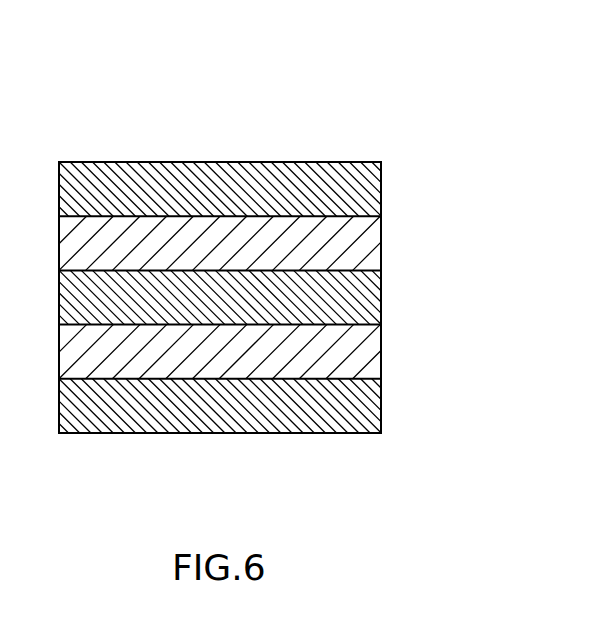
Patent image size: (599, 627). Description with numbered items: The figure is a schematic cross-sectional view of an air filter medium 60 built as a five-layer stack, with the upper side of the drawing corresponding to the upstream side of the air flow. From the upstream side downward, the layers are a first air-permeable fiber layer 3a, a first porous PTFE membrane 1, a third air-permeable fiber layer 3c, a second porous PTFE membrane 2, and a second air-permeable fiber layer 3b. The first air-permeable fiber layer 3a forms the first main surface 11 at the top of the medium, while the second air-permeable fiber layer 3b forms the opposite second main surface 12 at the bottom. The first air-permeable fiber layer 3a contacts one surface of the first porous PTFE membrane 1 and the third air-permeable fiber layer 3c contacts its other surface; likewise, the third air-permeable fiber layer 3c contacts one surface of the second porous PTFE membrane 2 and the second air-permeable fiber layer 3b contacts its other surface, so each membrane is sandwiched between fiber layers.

The air filter medium 60 is at (312, 112).
The first main surface 11 is at (213, 162).
The second main surface 12 is at (215, 433).
The first air-permeable fiber layer 3a is at (360, 185).
The first porous PTFE membrane 1 is at (358, 245).
The third air-permeable fiber layer 3c is at (360, 295).
The second porous PTFE membrane 2 is at (360, 352).
The second air-permeable fiber layer 3b is at (360, 406).